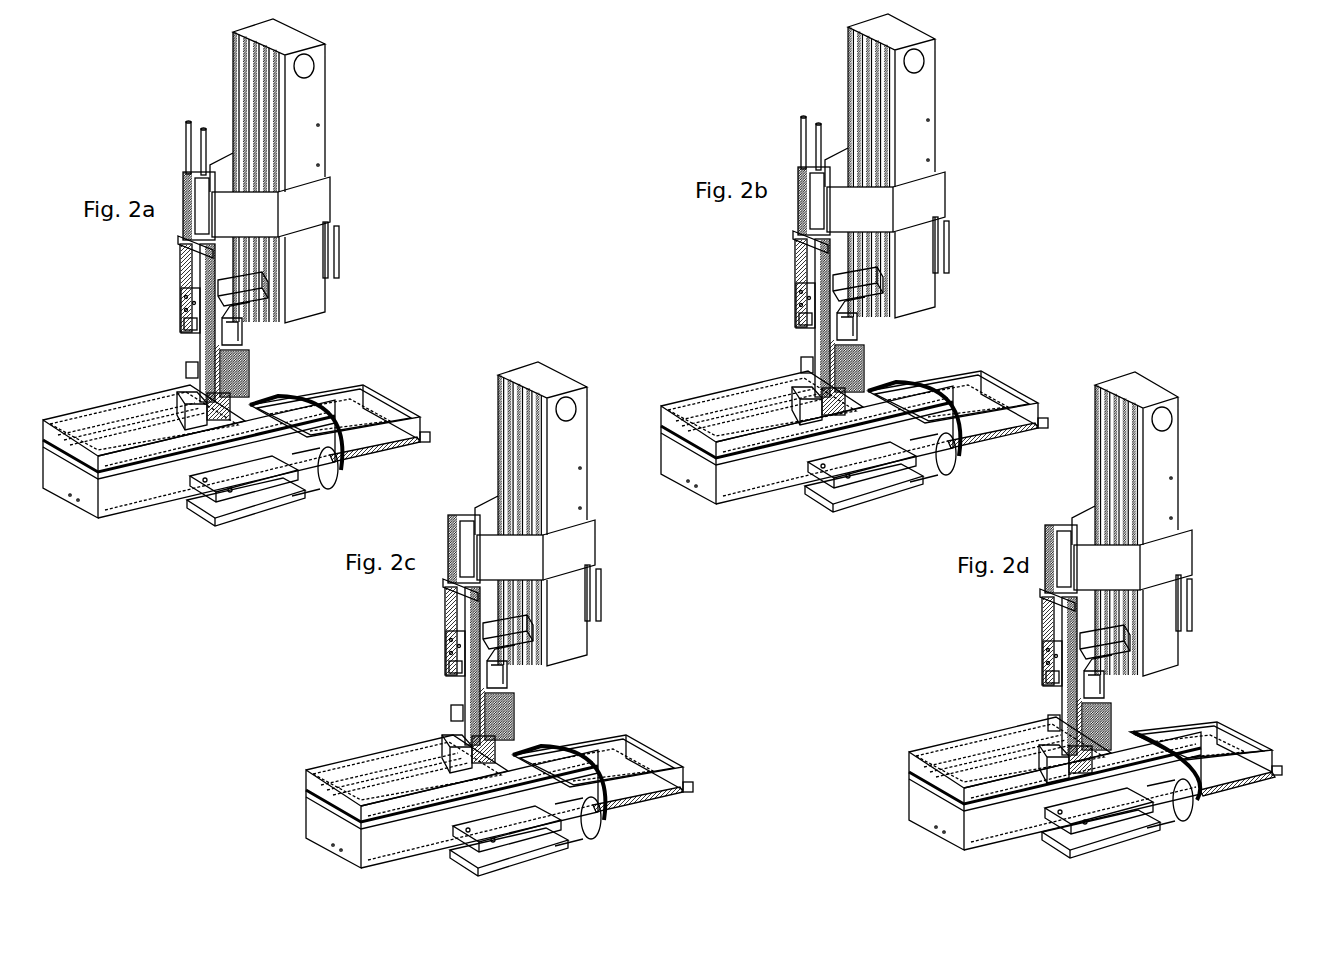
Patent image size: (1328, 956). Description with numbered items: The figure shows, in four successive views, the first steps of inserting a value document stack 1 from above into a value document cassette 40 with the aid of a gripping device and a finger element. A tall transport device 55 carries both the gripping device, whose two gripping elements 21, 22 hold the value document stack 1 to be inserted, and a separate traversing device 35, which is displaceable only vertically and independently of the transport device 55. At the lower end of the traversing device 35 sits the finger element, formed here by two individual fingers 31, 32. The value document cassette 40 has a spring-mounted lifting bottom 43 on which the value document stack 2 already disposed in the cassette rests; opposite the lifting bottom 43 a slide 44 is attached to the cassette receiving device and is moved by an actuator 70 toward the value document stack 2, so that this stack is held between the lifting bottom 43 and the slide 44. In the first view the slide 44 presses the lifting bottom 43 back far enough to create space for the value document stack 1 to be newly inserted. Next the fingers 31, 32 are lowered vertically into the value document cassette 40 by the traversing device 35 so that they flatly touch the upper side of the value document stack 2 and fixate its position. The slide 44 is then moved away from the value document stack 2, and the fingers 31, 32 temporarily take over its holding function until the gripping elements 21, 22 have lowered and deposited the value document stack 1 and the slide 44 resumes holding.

In FIG. 2A, the value document stack 1 is at (252, 360).
In FIG. 2B, the value document stack 1 is at (867, 356).
In FIG. 2C, the value document stack 1 is at (518, 710).
In FIG. 2D, the value document stack 1 is at (1118, 705).
In FIG. 2A, the value document stack 2 is at (232, 410).
In FIG. 2B, the value document stack 2 is at (766, 372).
In FIG. 2C, the value document stack 2 is at (416, 732).
In FIG. 2D, the value document stack 2 is at (1016, 722).
In FIG. 2A, the gripping element 21 is at (183, 350).
In FIG. 2B, the gripping element 21 is at (798, 346).
In FIG. 2C, the gripping element 21 is at (448, 698).
In FIG. 2D, the gripping element 21 is at (1046, 702).
In FIG. 2A, the gripping element 22 is at (246, 334).
In FIG. 2B, the gripping element 22 is at (861, 330).
In FIG. 2C, the gripping element 22 is at (510, 686).
In FIG. 2D, the gripping element 22 is at (1110, 685).
In FIG. 2A, the finger 31 is at (190, 380).
In FIG. 2B, the finger 31 is at (805, 376).
In FIG. 2C, the finger 31 is at (452, 729).
In FIG. 2D, the finger 31 is at (1052, 722).
In FIG. 2A, the finger 32 is at (197, 388).
In FIG. 2B, the finger 32 is at (815, 374).
In FIG. 2C, the finger 32 is at (462, 735).
In FIG. 2D, the finger 32 is at (1060, 726).
In FIG. 2A, the traversing device 35 is at (184, 178).
In FIG. 2B, the traversing device 35 is at (799, 174).
In FIG. 2C, the traversing device 35 is at (447, 526).
In FIG. 2D, the traversing device 35 is at (1046, 520).
In FIG. 2A, the value document cassette 40 is at (85, 500).
In FIG. 2B, the value document cassette 40 is at (690, 490).
In FIG. 2C, the value document cassette 40 is at (340, 855).
In FIG. 2D, the value document cassette 40 is at (940, 836).
In FIG. 2A, the lifting bottom 43 is at (172, 404).
In FIG. 2B, the lifting bottom 43 is at (762, 398).
In FIG. 2C, the lifting bottom 43 is at (408, 766).
In FIG. 2D, the lifting bottom 43 is at (1010, 752).
In FIG. 2A, the slide 44 is at (290, 412).
In FIG. 2B, the slide 44 is at (867, 393).
In FIG. 2C, the slide 44 is at (517, 758).
In FIG. 2D, the slide 44 is at (1140, 745).
In FIG. 2A, the transport device 55 is at (328, 122).
In FIG. 2B, the transport device 55 is at (943, 118).
In FIG. 2C, the transport device 55 is at (592, 469).
In FIG. 2D, the transport device 55 is at (1190, 465).
In FIG. 2A, the actuator 70 is at (282, 500).
In FIG. 2B, the actuator 70 is at (898, 492).
In FIG. 2C, the actuator 70 is at (545, 852).
In FIG. 2D, the actuator 70 is at (1143, 840).